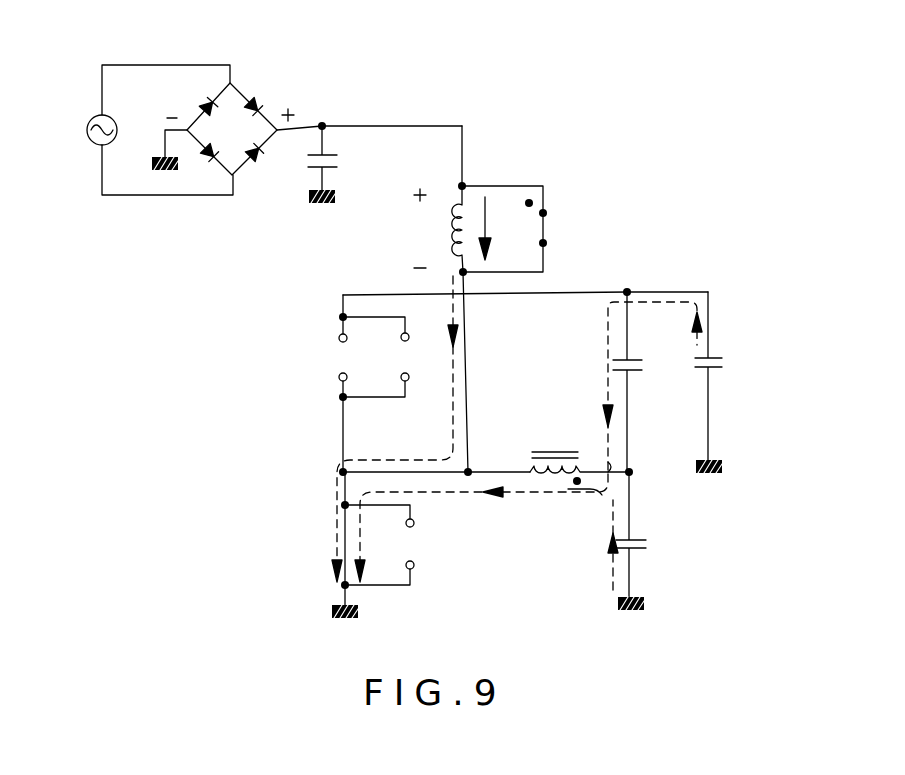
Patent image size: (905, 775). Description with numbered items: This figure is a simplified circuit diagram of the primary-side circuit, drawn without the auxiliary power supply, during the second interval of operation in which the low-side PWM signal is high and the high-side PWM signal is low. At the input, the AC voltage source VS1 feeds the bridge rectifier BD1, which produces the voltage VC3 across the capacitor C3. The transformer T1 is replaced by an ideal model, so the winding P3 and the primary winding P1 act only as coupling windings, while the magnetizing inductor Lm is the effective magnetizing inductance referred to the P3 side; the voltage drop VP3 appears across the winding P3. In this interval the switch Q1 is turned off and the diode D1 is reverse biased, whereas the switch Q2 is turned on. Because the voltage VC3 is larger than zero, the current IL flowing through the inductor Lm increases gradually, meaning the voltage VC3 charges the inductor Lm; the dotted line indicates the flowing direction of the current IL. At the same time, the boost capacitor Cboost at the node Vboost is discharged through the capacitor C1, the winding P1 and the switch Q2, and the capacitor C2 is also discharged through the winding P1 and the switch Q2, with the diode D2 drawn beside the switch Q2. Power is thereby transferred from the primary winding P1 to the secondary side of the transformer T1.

The AC voltage source VS1 is at (129, 130).
The bridge rectifier BD1 is at (223, 101).
The voltage across capacitor C3 VC3 is at (369, 110).
The capacitor C3 is at (343, 164).
The magnetizing inductor Lm is at (429, 299).
The voltage drop across winding P3 VP3 is at (408, 228).
The current IL is at (522, 218).
The winding P3 is at (526, 229).
The boost voltage Vboost is at (568, 278).
The switch Q1 is at (323, 383).
The diode D1 is at (393, 357).
The transformer T1 is at (581, 449).
The primary winding P1 is at (571, 502).
The capacitor C1 is at (647, 382).
The boost capacitor Cboost is at (761, 382).
The capacitor C2 is at (653, 541).
The switch Q2 is at (318, 545).
The diode D2 is at (398, 545).